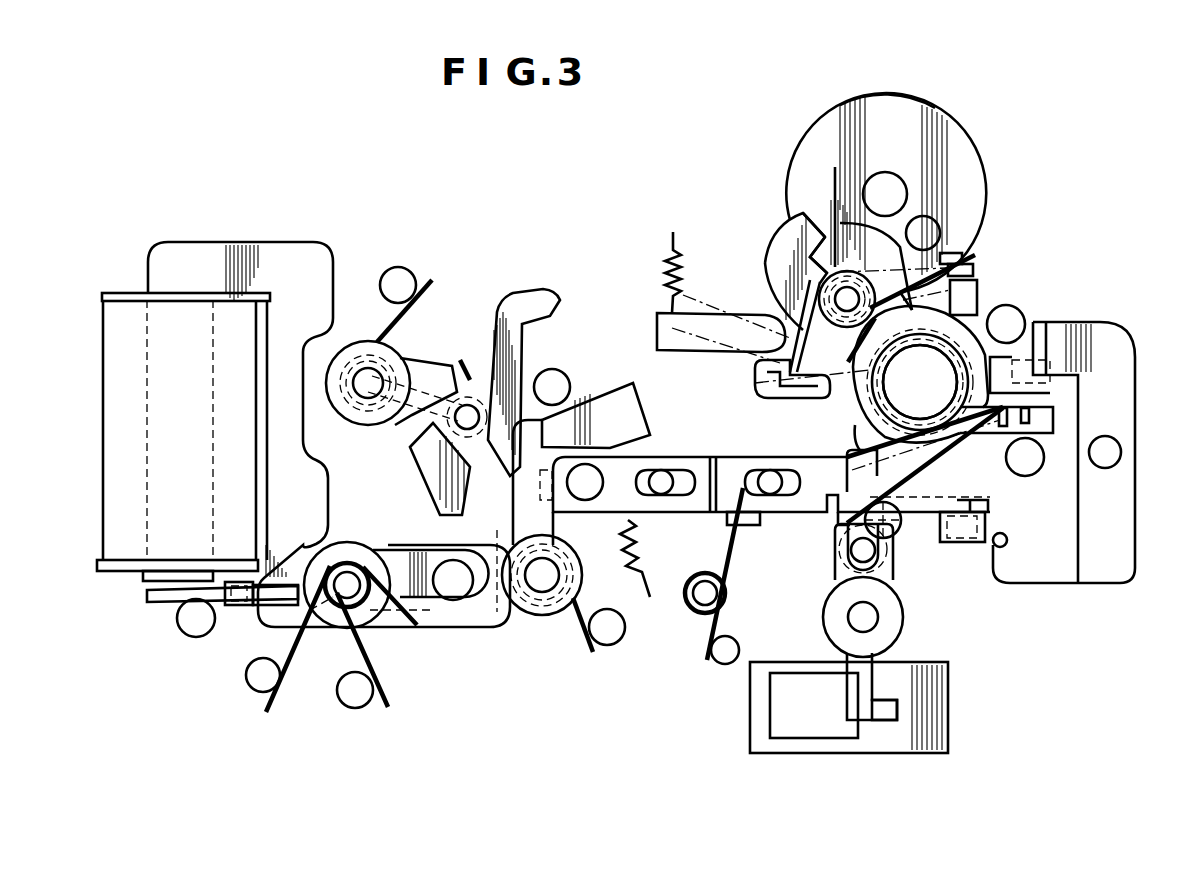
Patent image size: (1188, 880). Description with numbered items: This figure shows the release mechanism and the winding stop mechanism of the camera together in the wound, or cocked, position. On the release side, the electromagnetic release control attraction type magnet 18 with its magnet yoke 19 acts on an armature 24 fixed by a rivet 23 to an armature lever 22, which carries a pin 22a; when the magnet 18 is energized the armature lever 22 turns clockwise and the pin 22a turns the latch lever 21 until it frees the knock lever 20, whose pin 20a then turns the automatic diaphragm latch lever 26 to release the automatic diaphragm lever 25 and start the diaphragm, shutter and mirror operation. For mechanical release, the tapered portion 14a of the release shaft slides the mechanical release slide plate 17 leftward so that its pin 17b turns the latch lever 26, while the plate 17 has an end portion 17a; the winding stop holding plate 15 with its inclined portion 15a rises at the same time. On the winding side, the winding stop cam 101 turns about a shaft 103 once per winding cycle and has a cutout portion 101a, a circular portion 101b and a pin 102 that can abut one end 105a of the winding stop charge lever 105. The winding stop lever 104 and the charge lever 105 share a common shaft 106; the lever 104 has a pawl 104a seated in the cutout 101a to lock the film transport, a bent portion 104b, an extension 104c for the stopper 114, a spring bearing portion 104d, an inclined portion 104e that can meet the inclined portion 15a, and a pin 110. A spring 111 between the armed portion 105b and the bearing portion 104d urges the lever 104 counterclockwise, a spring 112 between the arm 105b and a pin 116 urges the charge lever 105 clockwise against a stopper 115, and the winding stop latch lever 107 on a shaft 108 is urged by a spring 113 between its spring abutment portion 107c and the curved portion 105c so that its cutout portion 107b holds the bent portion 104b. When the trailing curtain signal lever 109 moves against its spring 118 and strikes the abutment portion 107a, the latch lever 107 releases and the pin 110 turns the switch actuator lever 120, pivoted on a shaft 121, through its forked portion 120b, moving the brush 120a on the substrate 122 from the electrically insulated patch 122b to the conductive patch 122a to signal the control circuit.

The tapered portion 14a is at (1003, 550).
The winding stop holding plate 15 is at (1136, 520).
The inclined portion 15a is at (1040, 350).
The mechanical release slide plate 17 is at (691, 500).
The end portion of slide plate 17a is at (985, 560).
The pin 17b is at (580, 478).
The electromagnetic release control attraction type magnet 18 is at (118, 436).
The electromagnetic release control attraction type magnet yoke 19 is at (201, 256).
The knock lever 20 is at (397, 362).
The pin 20a is at (466, 410).
The latch lever 21 is at (490, 620).
The armature lever 22 is at (320, 600).
The pin 22a is at (455, 602).
The rivet 23 is at (240, 610).
The armature 24 is at (165, 602).
The automatic diaphragm lever 25 is at (602, 415).
The automatic diaphragm latch lever 26 is at (560, 530).
The winding stop cam 101 is at (958, 152).
The cutout portion 101a is at (833, 222).
The circular portion 101b is at (893, 97).
The pin 102 is at (932, 226).
The shaft 103 is at (887, 190).
The winding stop lever 104 is at (778, 268).
The pawl 104a is at (802, 222).
The bent portion 104b is at (977, 306).
The extension 104c is at (1075, 360).
The spring bearing portion 104d is at (832, 520).
The inclined portion 104e is at (1050, 378).
The winding stop charge lever 105 is at (852, 420).
The one end 105a is at (840, 165).
The armed portion 105b is at (1055, 425).
The curved portion 105c is at (866, 405).
The common shaft 106 is at (938, 440).
The winding stop latch lever 107 is at (800, 348).
The abutment portion 107a is at (760, 378).
The cutout portion 107b is at (972, 268).
The spring abutment portion 107c is at (962, 255).
The shaft 108 is at (812, 258).
The trailing curtain signal lever 109 is at (676, 352).
The pin 110 is at (852, 553).
The spring 111 is at (848, 470).
The spring 112 is at (905, 470).
The spring 113 is at (968, 250).
The stopper 114 is at (1010, 315).
The stopper 115 is at (1030, 472).
The pin 116 is at (897, 528).
The spring 118 is at (672, 252).
The switch actuator lever 120 is at (890, 625).
The brush 120a is at (885, 725).
The forked portion 120b is at (893, 568).
The shaft 121 is at (848, 619).
The substrate 122 is at (835, 755).
The conductive patch 122a is at (790, 740).
The electrically insulated patch 122b is at (930, 755).